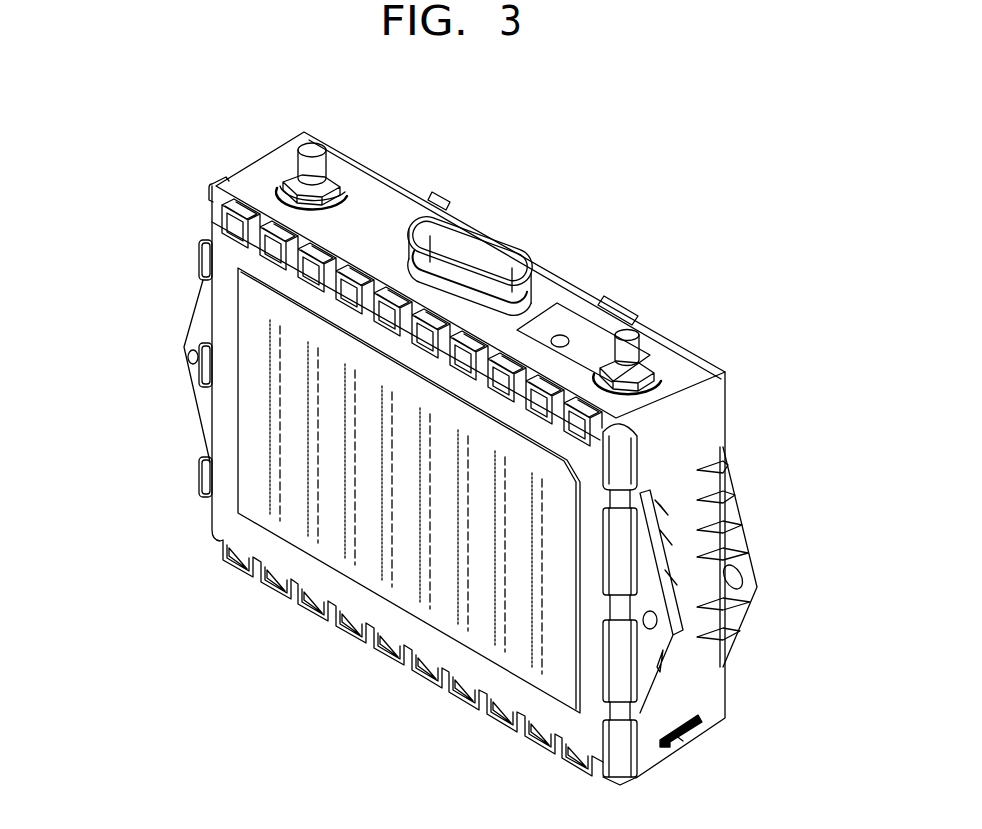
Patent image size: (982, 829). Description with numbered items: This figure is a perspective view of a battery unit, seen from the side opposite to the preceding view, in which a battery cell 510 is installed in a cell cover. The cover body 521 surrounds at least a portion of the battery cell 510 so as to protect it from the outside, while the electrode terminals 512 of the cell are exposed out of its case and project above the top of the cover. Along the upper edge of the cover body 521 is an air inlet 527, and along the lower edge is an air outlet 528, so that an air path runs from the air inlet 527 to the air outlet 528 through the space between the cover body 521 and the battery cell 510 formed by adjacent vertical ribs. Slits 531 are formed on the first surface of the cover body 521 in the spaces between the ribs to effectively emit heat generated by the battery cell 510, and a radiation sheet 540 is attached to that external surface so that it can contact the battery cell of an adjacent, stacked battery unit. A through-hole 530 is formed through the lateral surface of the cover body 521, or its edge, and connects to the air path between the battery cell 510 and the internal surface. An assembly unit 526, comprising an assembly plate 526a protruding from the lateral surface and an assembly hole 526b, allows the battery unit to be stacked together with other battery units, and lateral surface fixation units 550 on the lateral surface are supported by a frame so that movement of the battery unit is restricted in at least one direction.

The battery cell 510 is at (587, 343).
The electrode terminals 512 is at (318, 148).
The cover body 521 is at (262, 176).
The assembly unit 526 is at (460, 496).
The assembly plate 526a is at (195, 337).
The assembly hole 526b is at (186, 362).
The air inlet 527 is at (361, 272).
The air outlet 528 is at (347, 627).
The through-hole 530 is at (212, 316).
The slits 531 is at (350, 528).
The radiation sheet 540 is at (407, 578).
The lateral surface fixation units 550 is at (688, 730).